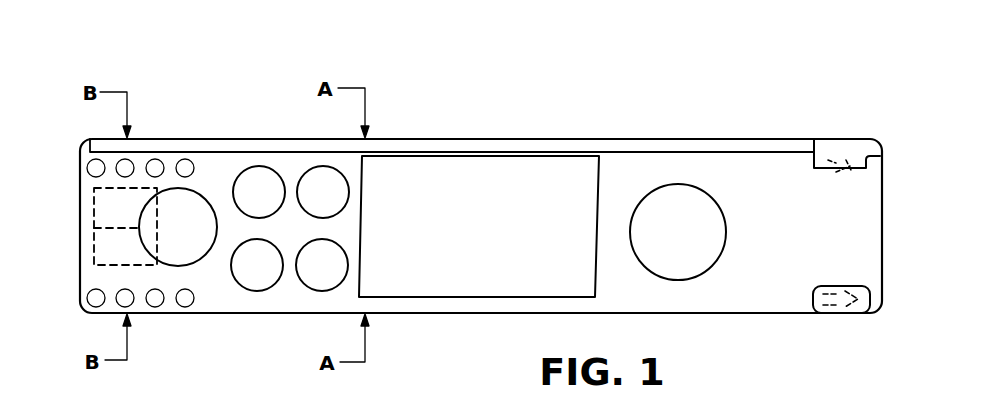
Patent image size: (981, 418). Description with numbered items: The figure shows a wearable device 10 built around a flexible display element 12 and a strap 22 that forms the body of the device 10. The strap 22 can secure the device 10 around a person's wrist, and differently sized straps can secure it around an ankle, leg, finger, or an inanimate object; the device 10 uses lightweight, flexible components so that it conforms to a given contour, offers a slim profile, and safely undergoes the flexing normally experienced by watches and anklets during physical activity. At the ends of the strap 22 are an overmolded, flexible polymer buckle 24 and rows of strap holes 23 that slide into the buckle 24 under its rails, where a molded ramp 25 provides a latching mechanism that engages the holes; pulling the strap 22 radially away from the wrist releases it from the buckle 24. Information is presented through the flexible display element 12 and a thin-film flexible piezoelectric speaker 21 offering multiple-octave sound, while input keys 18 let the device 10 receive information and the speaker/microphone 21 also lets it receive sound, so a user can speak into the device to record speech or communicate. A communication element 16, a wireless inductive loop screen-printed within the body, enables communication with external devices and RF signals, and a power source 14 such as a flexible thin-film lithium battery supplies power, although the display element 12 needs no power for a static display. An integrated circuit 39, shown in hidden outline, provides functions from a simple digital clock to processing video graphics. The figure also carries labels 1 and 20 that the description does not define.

The wearable device 10 is at (500, 84).
The faceplate 1 is at (832, 314).
The flexible display element 12 is at (450, 282).
The power source 14 is at (175, 188).
The communication element 16 is at (137, 255).
The input keys 18 is at (247, 168).
The upper flange 20 is at (270, 138).
The thin-film flexible piezoelectric speaker 21 is at (660, 200).
The strap 22 is at (743, 294).
The strap holes 23 is at (88, 162).
The buckle 24 is at (830, 139).
The molded ramp 25 is at (833, 171).
The integrated circuit 39 is at (100, 210).